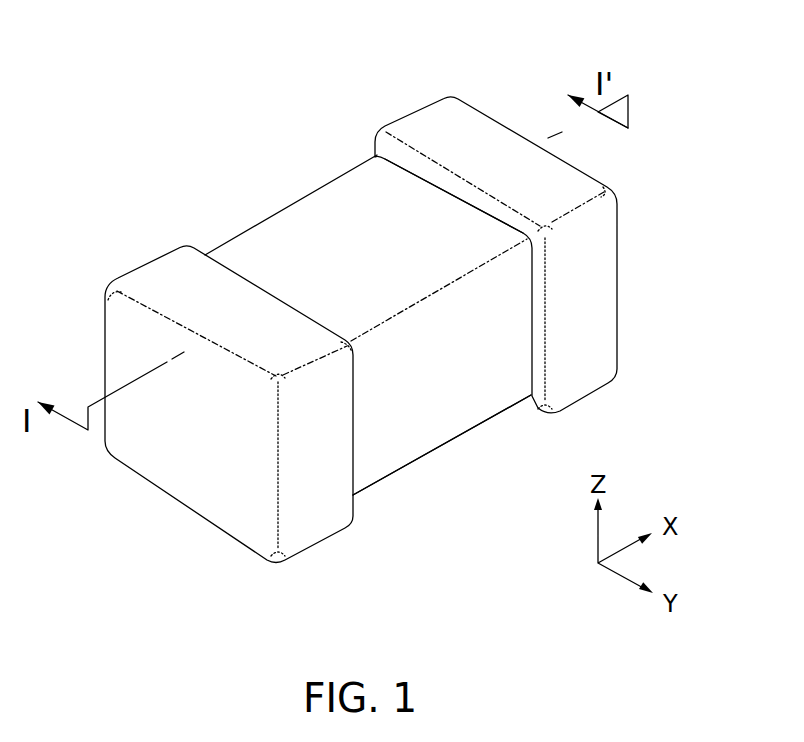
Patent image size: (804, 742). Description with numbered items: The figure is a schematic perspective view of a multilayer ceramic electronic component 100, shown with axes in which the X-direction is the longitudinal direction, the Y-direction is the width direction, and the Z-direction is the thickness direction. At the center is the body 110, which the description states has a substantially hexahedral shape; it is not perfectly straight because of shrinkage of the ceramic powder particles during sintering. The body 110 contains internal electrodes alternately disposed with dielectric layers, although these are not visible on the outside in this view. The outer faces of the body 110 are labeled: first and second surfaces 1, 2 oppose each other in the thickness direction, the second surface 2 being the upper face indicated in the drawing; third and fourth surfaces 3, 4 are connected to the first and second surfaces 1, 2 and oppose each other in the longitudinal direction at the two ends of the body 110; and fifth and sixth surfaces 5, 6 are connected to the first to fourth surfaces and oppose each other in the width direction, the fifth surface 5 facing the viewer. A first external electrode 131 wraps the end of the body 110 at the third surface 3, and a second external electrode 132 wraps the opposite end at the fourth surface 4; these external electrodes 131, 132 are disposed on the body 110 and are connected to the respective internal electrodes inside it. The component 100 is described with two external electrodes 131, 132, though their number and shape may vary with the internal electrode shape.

The multilayer ceramic electronic component 100 is at (229, 36).
The body 110 is at (353, 314).
The first external electrode 131 is at (228, 375).
The second external electrode 132 is at (532, 228).
The first surface 1 is at (385, 455).
The second surface 2 is at (367, 182).
The third surface 3 is at (170, 458).
The fourth surface 4 is at (578, 243).
The fifth surface 5 is at (470, 395).
The sixth surface 6 is at (308, 222).